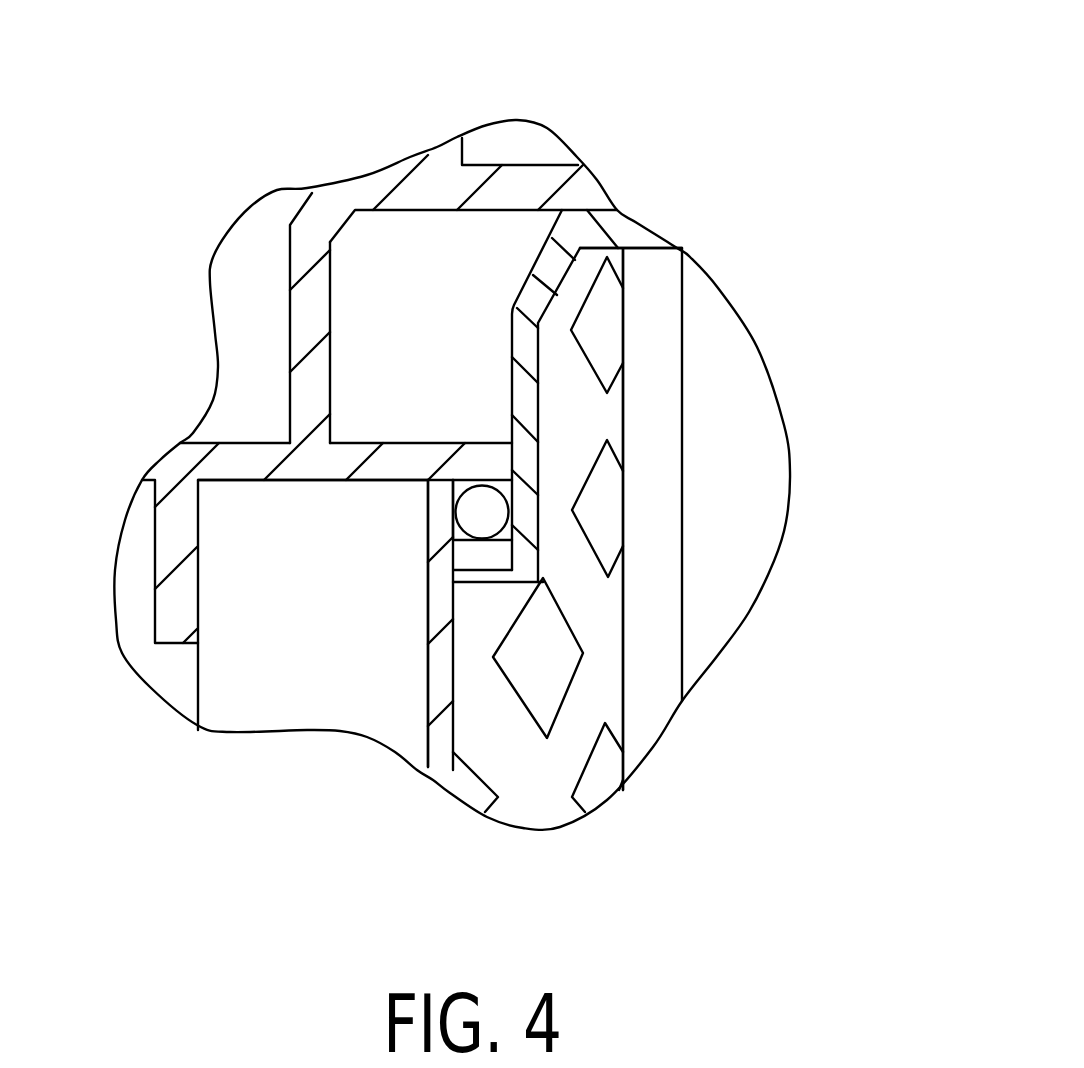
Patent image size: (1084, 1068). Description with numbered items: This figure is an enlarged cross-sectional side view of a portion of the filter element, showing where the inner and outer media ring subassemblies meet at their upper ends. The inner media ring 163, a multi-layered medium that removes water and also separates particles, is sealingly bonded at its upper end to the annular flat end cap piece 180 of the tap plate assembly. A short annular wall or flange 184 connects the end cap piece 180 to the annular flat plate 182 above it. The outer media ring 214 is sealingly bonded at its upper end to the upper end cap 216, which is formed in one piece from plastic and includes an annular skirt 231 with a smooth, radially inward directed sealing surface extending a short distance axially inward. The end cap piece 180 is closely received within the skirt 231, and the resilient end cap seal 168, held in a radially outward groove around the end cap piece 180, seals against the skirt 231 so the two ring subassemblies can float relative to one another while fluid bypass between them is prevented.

The inner media ring 163 is at (230, 700).
The end cap seal 168 is at (478, 512).
The end cap piece 180 is at (237, 453).
The flat plate 182 is at (507, 180).
The annular flange 184 is at (305, 307).
The outer media ring 214 is at (735, 561).
The upper end cap 216 is at (617, 225).
The annular skirt 231 is at (507, 353).